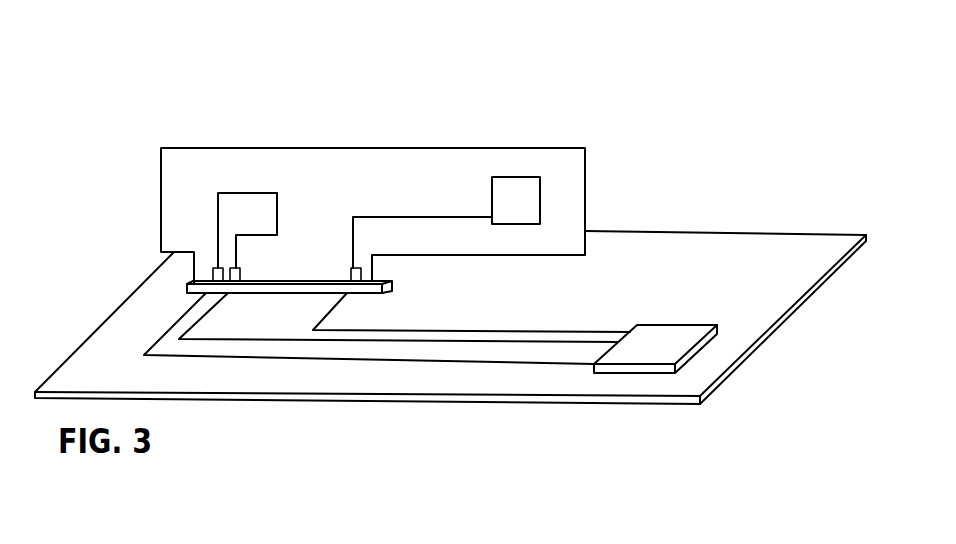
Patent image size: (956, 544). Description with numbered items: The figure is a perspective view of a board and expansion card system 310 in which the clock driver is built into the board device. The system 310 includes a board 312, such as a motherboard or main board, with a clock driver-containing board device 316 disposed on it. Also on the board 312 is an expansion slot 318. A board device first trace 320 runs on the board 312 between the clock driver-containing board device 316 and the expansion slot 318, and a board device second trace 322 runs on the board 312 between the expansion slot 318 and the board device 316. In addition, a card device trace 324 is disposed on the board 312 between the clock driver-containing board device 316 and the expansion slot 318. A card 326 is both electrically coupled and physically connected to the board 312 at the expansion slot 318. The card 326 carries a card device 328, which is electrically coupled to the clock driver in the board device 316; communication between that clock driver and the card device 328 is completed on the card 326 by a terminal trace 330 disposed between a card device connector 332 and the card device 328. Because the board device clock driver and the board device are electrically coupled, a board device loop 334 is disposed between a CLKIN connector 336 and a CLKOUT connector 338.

The system 310 is at (580, 80).
The board 312 is at (800, 247).
The clock driver-containing board device 316 is at (648, 353).
The expansion slot 318 is at (283, 288).
The board device first trace 320 is at (578, 342).
The board device second trace 322 is at (523, 360).
The card device trace 324 is at (472, 331).
The card 326 is at (363, 167).
The card device 328 is at (522, 193).
The terminal trace 330 is at (430, 217).
The card device connector 332 is at (355, 281).
The board device loop 334 is at (255, 193).
The CLKIN connector 336 is at (236, 282).
The CLKOUT connector 338 is at (216, 277).